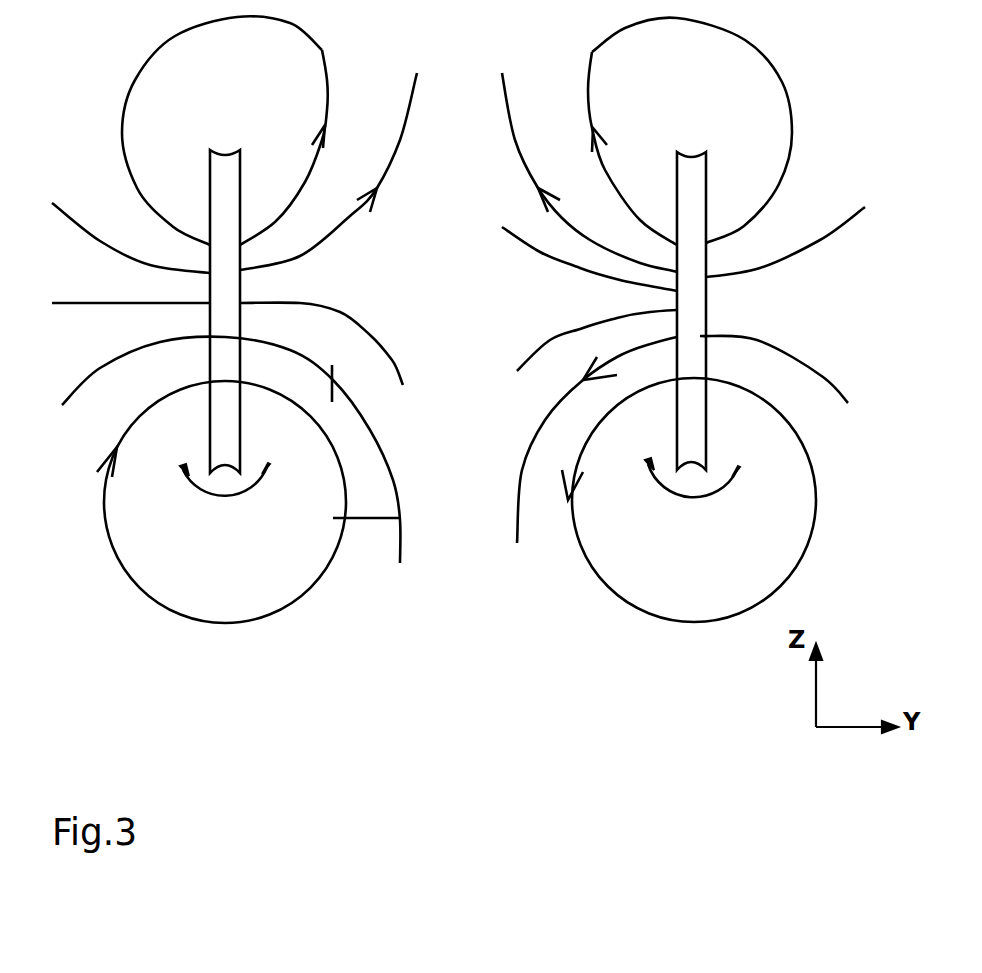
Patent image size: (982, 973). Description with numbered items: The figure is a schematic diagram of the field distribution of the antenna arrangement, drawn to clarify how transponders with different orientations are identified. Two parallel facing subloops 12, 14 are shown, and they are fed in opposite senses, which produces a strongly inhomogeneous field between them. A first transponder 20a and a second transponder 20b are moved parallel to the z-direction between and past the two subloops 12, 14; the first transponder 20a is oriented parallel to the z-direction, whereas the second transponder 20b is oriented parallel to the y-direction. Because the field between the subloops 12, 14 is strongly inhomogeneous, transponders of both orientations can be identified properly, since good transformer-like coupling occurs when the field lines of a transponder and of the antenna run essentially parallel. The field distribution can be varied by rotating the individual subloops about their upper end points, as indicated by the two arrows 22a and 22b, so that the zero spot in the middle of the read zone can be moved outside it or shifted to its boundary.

The subloop 12 is at (706, 311).
The subloop 14 is at (240, 293).
The first transponder 20a is at (332, 400).
The second transponder 20b is at (358, 520).
The arrow 22a is at (700, 497).
The arrow 22b is at (197, 490).